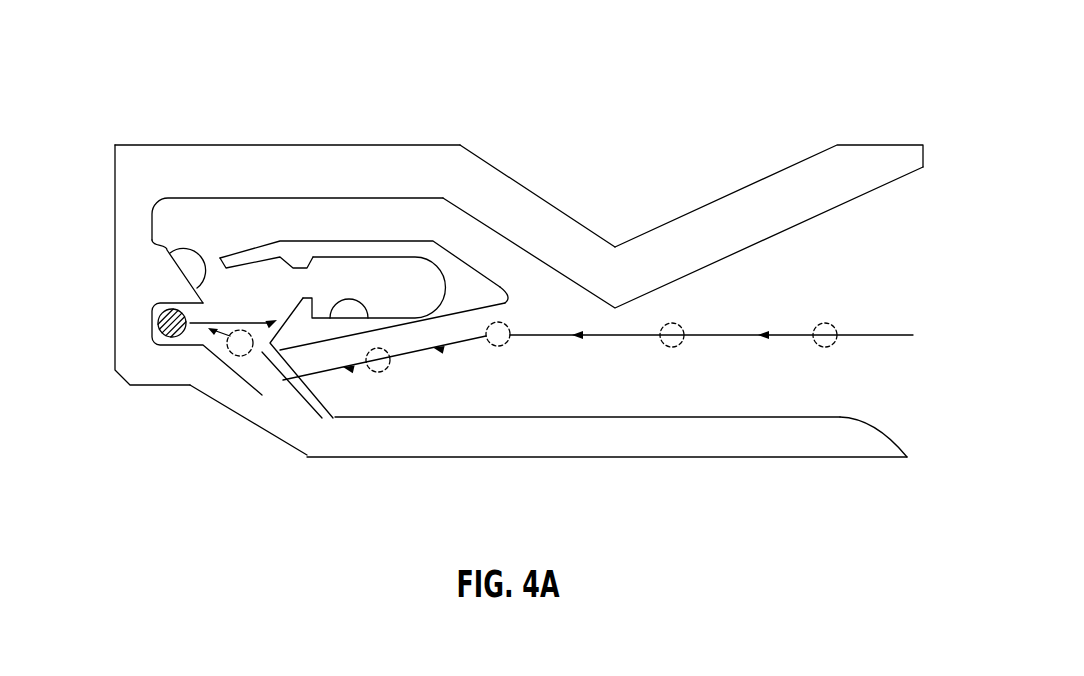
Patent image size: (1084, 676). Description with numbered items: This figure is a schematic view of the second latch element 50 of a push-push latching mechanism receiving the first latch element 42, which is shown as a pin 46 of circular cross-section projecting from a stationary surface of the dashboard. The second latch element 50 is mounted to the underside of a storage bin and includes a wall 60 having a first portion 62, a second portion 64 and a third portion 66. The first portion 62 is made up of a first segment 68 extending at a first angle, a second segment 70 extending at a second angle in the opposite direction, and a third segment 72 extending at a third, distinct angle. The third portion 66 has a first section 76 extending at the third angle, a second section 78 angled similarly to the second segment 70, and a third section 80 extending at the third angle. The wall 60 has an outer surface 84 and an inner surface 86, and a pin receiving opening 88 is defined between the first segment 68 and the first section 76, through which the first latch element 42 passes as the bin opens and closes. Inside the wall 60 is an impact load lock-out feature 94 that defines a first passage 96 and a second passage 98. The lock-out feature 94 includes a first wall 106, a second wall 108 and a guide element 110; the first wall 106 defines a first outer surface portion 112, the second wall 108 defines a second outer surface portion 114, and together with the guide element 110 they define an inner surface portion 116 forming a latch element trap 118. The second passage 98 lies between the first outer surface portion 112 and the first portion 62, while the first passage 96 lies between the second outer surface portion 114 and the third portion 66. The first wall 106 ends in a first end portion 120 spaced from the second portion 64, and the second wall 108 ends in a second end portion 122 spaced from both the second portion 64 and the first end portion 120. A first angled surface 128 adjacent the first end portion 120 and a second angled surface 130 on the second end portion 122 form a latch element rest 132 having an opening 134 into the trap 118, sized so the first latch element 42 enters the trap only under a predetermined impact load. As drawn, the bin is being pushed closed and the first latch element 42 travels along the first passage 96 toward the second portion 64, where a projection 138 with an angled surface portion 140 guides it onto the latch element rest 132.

The first latch element 42 is at (838, 306).
The pin 46 is at (820, 348).
The second latch element 50 is at (200, 73).
The wall 60 is at (420, 135).
The first portion 62 is at (722, 212).
The second portion 64 is at (122, 252).
The third portion 66 is at (608, 452).
The first segment 68 is at (697, 243).
The second segment 70 is at (530, 208).
The third segment 72 is at (283, 173).
The first section 76 is at (773, 447).
The second section 78 is at (245, 414).
The third section 80 is at (117, 345).
The outer surface 84 is at (647, 231).
The inner surface 86 is at (547, 417).
The pin receiving opening 88 is at (892, 387).
The impact load lock-out feature 94 is at (320, 215).
The first passage 96 is at (383, 392).
The second passage 98 is at (233, 220).
The first wall 106 is at (414, 240).
The second wall 108 is at (388, 370).
The guide element 110 is at (465, 268).
The first outer surface portion 112 is at (357, 240).
The second outer surface portion 114 is at (450, 340).
The inner surface portion 116 is at (375, 388).
The latch element trap 118 is at (503, 303).
The first end portion 120 is at (222, 260).
The second end portion 122 is at (297, 345).
The first angled surface 128 is at (290, 270).
The second angled surface 130 is at (258, 343).
The latch element rest 132 is at (292, 302).
The opening 134 is at (427, 340).
The projection 138 is at (172, 287).
The angled surface portion 140 is at (173, 256).